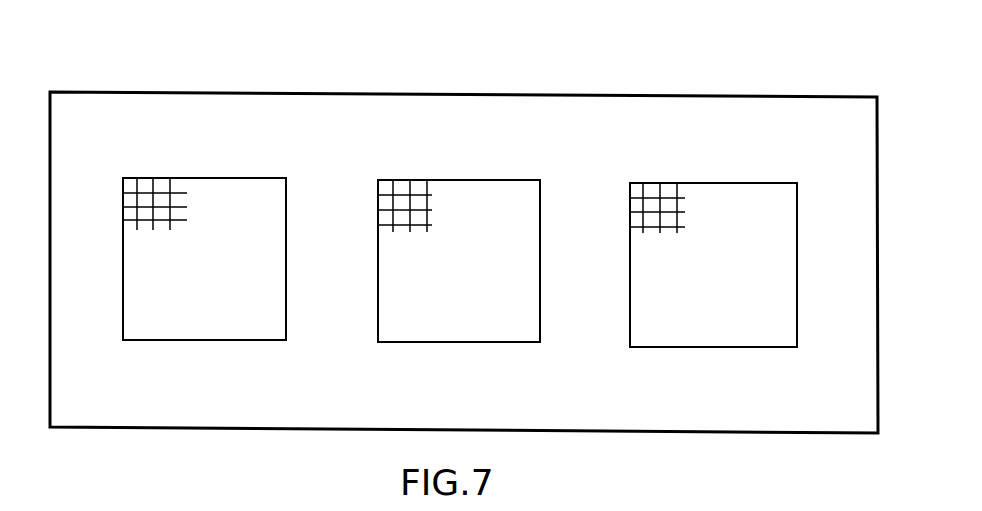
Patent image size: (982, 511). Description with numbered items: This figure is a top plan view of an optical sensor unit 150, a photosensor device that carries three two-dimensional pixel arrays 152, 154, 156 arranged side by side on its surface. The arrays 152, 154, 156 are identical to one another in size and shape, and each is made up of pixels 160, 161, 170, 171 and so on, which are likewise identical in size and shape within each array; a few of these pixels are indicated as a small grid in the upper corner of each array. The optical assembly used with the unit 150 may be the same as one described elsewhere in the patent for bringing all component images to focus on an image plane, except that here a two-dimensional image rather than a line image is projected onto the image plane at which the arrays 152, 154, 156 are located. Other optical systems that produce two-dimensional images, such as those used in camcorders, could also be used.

The optical sensor unit 150 is at (717, 75).
The two-dimensional pixel array 152 is at (240, 187).
The two-dimensional pixel array 154 is at (485, 188).
The two-dimensional pixel array 156 is at (753, 193).
The pixel 160 is at (137, 185).
The pixel 161 is at (147, 185).
The pixel 170 is at (128, 198).
The pixel 171 is at (147, 200).